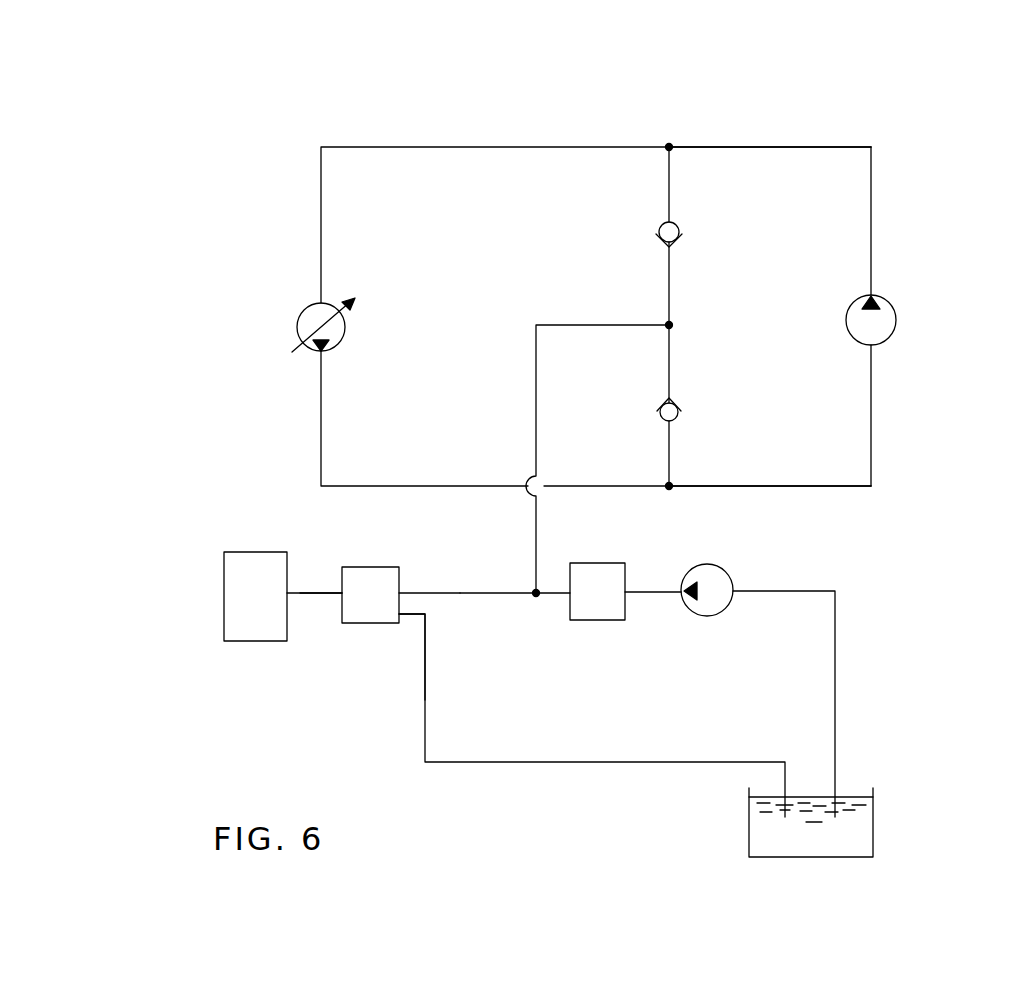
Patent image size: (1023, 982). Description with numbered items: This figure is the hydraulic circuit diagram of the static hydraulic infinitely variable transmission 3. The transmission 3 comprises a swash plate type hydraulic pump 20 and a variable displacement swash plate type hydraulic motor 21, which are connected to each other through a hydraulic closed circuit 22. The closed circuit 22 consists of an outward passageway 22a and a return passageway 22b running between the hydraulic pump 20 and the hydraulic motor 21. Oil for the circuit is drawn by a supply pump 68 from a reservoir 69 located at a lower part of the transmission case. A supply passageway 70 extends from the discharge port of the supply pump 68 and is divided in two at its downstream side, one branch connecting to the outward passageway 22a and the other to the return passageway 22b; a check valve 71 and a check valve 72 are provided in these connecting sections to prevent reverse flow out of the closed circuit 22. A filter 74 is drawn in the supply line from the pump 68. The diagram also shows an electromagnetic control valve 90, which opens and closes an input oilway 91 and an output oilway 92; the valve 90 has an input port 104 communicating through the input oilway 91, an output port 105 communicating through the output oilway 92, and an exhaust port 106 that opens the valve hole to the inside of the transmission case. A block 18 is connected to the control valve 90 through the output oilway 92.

The static hydraulic infinitely variable transmission 3 is at (570, 132).
The controller 18 is at (242, 641).
The hydraulic pump 20 is at (892, 335).
The hydraulic motor 21 is at (307, 312).
The hydraulic closed circuit 22 is at (878, 221).
The outward passageway 22a is at (788, 147).
The return passageway 22b is at (765, 486).
The supply pump 68 is at (716, 614).
The reservoir 69 is at (873, 812).
The supply passageway 70 is at (533, 398).
The check valve 71 is at (678, 226).
The check valve 72 is at (662, 423).
The filter 74 is at (596, 620).
The electromagnetic control valve 90 is at (358, 623).
The input oilway 91 is at (477, 593).
The output oilway 92 is at (316, 587).
The input port 104 is at (402, 592).
The output port 105 is at (338, 598).
The exhaust port 106 is at (403, 614).